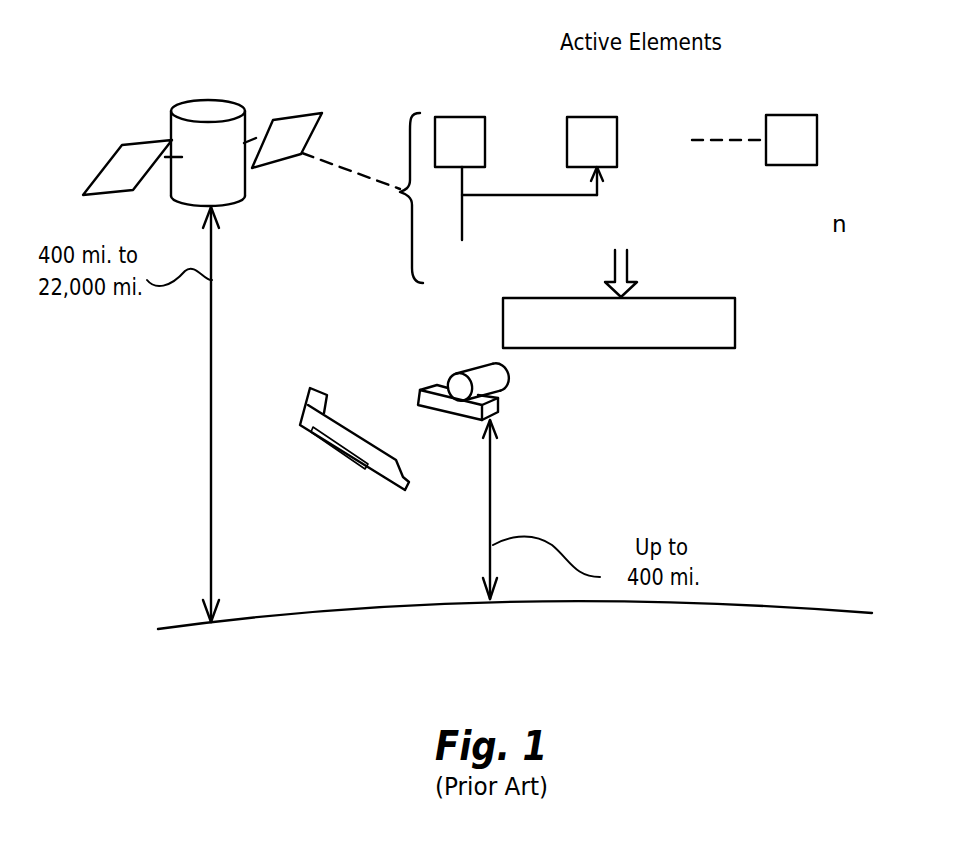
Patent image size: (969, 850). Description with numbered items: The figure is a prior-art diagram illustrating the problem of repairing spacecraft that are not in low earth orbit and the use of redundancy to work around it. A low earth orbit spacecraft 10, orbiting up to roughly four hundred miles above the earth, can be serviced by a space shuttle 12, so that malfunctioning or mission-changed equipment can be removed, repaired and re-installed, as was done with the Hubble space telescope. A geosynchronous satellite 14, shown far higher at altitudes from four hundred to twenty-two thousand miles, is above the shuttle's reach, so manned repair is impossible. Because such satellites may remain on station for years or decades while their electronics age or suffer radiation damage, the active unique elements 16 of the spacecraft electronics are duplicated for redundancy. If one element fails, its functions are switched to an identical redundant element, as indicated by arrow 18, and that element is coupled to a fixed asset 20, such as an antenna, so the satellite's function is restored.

The low earth orbit spacecraft 10 is at (499, 404).
The space shuttle 12 is at (375, 478).
The geosynchronous satellite 14 is at (217, 107).
The active unique elements 16 is at (473, 117).
The arrow 18 is at (538, 195).
The fixed asset 20 is at (737, 313).